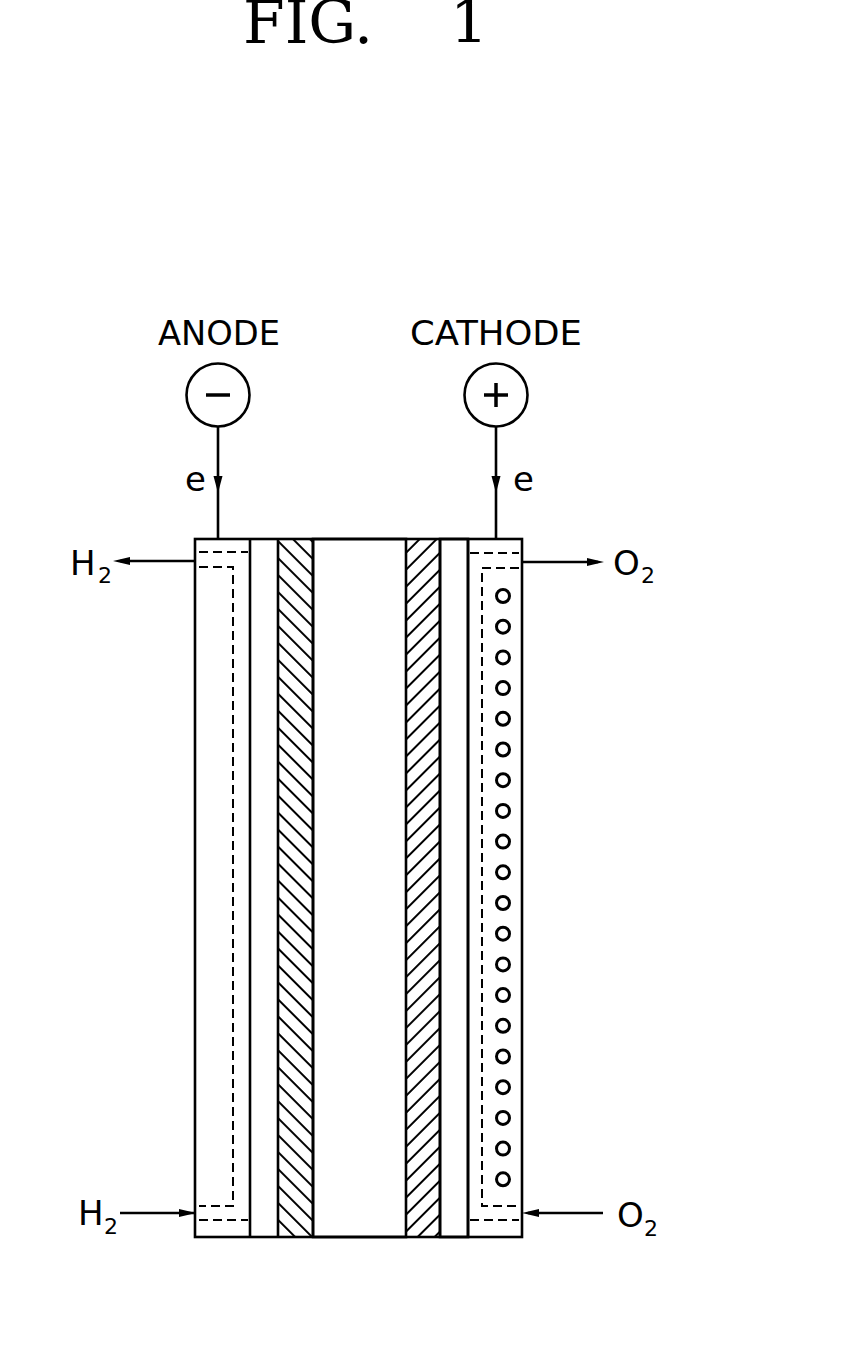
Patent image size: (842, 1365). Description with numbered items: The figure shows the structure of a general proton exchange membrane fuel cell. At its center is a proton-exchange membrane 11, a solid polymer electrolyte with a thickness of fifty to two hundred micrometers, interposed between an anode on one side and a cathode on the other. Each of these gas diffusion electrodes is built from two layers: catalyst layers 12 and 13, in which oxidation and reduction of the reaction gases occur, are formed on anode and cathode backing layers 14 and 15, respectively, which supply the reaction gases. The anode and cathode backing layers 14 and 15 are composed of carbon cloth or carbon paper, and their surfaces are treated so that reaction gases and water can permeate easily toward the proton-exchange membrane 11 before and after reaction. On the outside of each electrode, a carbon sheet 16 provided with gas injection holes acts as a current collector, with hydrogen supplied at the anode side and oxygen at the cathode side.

The proton-exchange membrane 11 is at (365, 1237).
The anode catalyst layer 12 is at (297, 1237).
The cathode catalyst layer 13 is at (425, 1237).
The anode backing layer 14 is at (265, 757).
The cathode backing layer 15 is at (448, 736).
The carbon sheet 16 is at (217, 855).